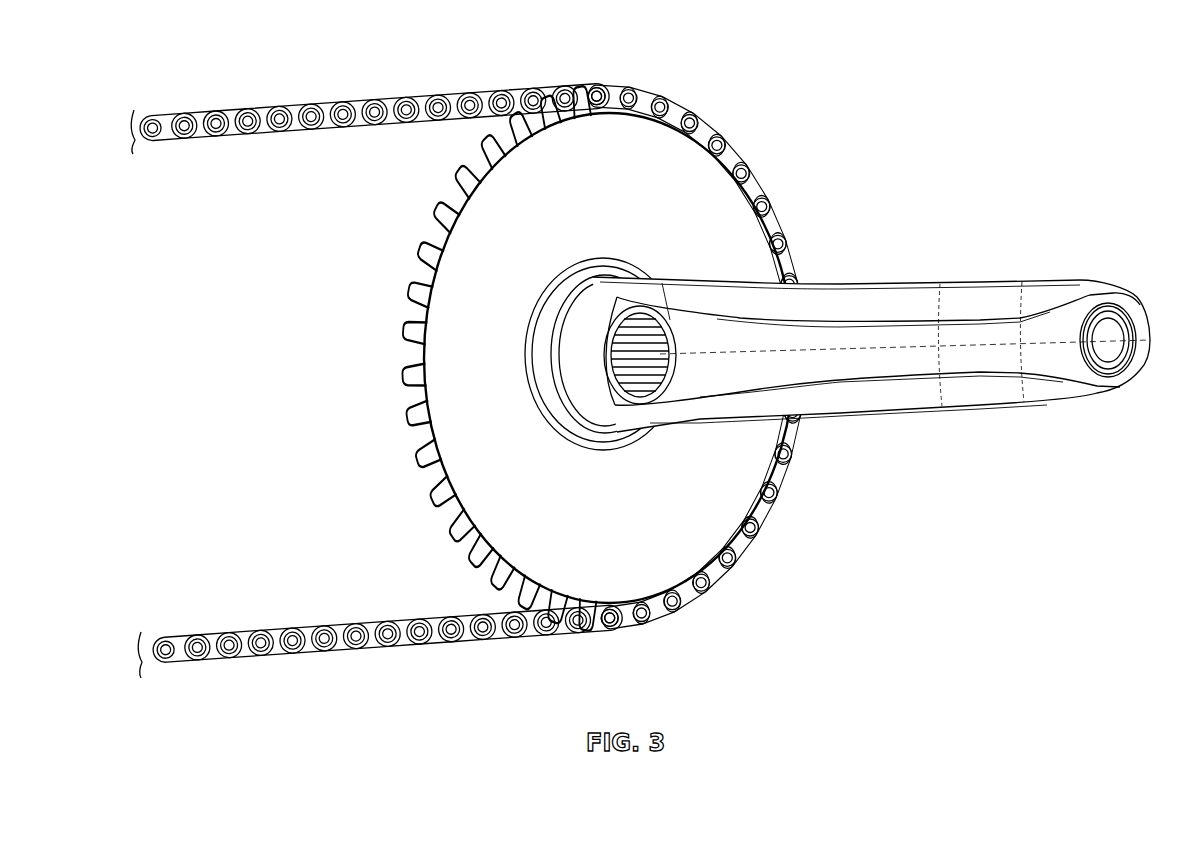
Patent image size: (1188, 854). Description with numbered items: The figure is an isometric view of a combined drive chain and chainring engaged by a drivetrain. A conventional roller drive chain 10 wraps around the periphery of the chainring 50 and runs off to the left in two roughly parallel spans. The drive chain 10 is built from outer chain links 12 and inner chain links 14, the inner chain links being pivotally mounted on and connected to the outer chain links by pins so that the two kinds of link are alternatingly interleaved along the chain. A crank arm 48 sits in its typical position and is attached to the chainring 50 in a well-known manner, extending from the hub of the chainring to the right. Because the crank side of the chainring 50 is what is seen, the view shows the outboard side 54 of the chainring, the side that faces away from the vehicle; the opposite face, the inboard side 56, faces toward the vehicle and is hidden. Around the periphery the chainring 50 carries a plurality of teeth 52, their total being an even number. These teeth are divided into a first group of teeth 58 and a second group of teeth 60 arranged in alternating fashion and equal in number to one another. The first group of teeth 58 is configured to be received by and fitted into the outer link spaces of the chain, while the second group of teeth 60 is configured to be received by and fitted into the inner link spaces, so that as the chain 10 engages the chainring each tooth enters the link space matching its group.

The drive chain 10 is at (640, 352).
The outer chain links 12 is at (469, 352).
The inner chain links 14 is at (640, 100).
The crank arm 48 is at (922, 284).
The chainring 50 is at (531, 358).
The plurality of teeth 52 is at (432, 358).
The outboard side 54 is at (448, 448).
The inboard side 56 is at (405, 393).
The first group of teeth 58 is at (483, 140).
The second group of teeth 60 is at (417, 250).